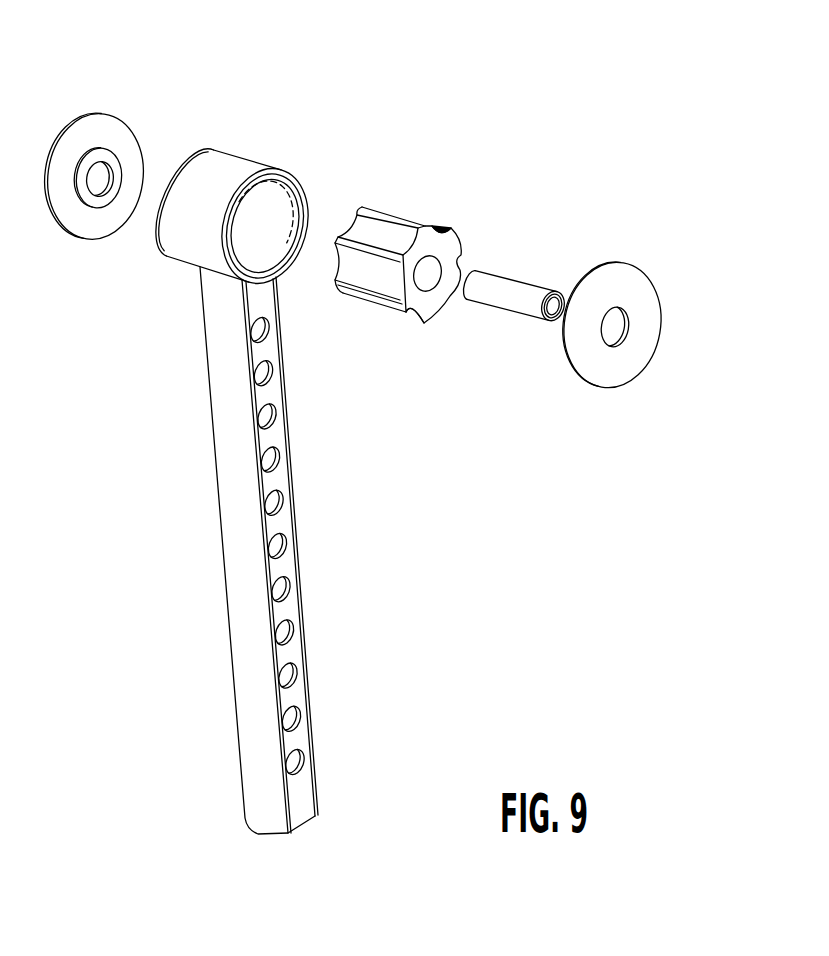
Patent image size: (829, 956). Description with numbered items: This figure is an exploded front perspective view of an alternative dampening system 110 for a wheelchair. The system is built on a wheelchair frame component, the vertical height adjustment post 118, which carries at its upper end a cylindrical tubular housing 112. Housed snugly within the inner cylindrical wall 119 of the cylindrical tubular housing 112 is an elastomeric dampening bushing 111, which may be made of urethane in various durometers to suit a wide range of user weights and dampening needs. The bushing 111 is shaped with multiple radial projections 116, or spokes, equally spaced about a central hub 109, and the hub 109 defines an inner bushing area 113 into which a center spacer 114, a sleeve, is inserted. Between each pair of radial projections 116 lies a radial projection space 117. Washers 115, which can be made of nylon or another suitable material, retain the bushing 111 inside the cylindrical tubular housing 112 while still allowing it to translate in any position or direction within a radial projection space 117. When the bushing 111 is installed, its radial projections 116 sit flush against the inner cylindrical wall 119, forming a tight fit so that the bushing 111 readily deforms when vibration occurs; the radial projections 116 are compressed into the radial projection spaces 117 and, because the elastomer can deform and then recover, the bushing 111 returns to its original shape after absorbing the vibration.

The hub 109 is at (442, 291).
The dampening system 110 is at (686, 391).
The elastomeric dampening bushing 111 is at (403, 183).
The cylindrical tubular housing 112 is at (223, 180).
The inner bushing area 113 is at (422, 269).
The center spacer 114 is at (533, 309).
The washers 115 is at (97, 135).
The radial projections 116 is at (368, 300).
The radial projection space 117 is at (412, 318).
The vertical height adjustment post 118 is at (232, 445).
The inner cylindrical wall 119 is at (257, 221).